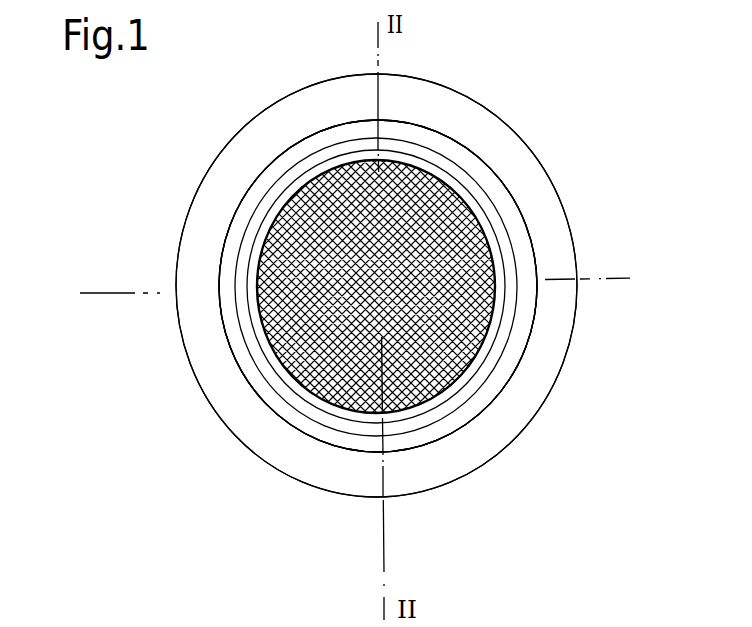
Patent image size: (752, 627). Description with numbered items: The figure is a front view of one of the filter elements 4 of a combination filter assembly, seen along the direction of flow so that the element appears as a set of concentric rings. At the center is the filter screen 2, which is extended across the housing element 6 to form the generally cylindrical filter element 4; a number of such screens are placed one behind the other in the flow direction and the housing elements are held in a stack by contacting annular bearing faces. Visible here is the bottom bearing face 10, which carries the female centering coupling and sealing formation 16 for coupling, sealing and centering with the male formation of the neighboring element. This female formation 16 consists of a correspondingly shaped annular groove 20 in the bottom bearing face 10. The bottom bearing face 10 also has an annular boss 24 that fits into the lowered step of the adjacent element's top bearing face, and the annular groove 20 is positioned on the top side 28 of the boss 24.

The filter screen 2 is at (465, 198).
The filter element 4 is at (573, 242).
The housing element 6 is at (565, 315).
The bottom bearing face 10 is at (547, 368).
The female centering coupling and sealing formation 16 is at (262, 405).
The annular groove 20 is at (317, 417).
The annular boss 24 is at (343, 455).
The top side of the boss 28 is at (412, 132).